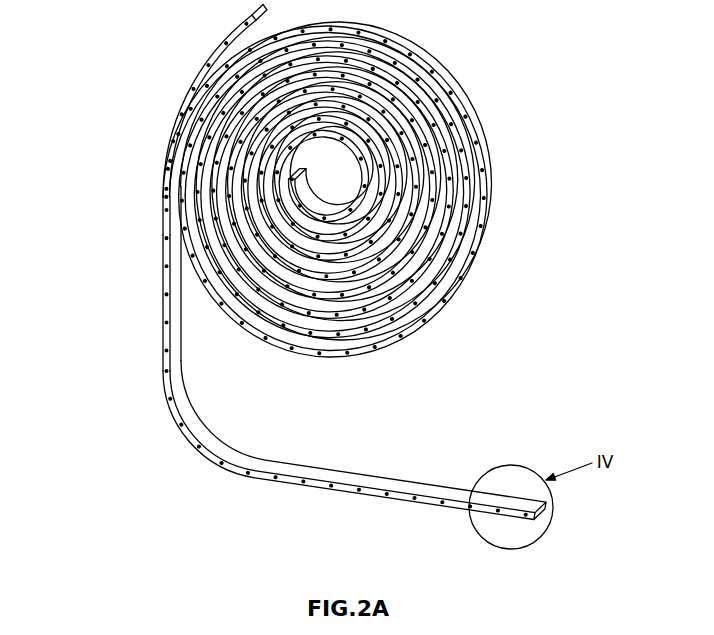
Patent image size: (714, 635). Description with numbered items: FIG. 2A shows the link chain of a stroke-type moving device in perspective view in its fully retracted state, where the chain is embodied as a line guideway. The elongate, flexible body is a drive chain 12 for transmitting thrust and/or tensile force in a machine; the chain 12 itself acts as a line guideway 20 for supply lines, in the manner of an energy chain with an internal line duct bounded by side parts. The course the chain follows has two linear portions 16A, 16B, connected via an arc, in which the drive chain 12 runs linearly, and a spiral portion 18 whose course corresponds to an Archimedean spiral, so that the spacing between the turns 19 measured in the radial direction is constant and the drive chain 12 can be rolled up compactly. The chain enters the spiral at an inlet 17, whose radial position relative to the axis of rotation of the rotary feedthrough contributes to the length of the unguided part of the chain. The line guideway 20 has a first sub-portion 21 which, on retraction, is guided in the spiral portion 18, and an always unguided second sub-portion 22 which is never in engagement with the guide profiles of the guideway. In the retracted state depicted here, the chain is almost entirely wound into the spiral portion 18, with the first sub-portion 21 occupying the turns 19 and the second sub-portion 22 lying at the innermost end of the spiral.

The drive chain 12 is at (345, 283).
The linear portion 16A is at (143, 203).
The second straight portion of strip 16B is at (354, 461).
The inlet 17 is at (150, 201).
The spiral portion 18 is at (398, 213).
The turns 19 is at (320, 255).
The line guideway 20 is at (472, 298).
The first sub-portion 21 is at (335, 127).
The second sub-portion 22 is at (313, 212).